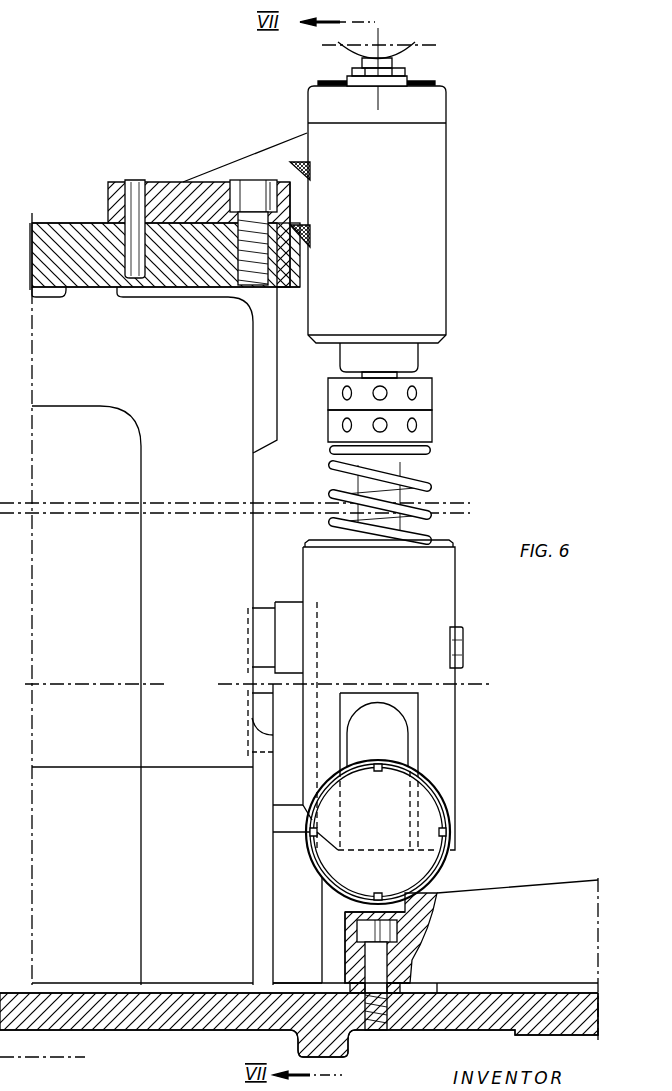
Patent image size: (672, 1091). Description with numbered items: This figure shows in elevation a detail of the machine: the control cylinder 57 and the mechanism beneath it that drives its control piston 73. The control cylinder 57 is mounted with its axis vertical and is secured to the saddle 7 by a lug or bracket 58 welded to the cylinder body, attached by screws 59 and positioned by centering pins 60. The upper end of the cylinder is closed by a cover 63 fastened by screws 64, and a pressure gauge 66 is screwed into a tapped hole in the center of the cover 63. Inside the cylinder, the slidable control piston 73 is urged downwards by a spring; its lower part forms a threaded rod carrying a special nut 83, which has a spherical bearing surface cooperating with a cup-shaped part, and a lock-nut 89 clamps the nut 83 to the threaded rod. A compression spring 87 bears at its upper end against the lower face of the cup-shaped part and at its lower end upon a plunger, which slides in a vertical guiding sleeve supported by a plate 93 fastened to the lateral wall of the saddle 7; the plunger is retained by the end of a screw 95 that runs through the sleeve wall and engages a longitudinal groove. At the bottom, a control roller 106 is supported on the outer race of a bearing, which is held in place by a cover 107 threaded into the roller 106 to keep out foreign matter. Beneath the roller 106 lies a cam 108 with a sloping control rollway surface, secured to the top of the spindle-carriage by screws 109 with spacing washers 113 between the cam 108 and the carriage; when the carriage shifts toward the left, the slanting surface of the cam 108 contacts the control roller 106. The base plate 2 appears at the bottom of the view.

The base plate 2 is at (590, 1013).
The saddle 7 is at (58, 234).
The control cylinder 57 is at (435, 212).
The lug or bracket 58 is at (187, 197).
The screws 59 is at (257, 175).
The centering pins 60 is at (133, 188).
The cover 63 is at (430, 117).
The screws 64 is at (425, 78).
The pressure gauge 66 is at (393, 50).
The control piston 73 is at (405, 361).
The special nut 83 is at (423, 432).
The compression spring 87 is at (425, 478).
The lock-nut 89 is at (423, 403).
The plate 93 is at (285, 610).
The screw 95 is at (459, 647).
The control roller 106 is at (443, 861).
The cover 107 is at (425, 812).
The cam 108 is at (545, 896).
The screws 109 is at (407, 967).
The spacing washers 113 is at (407, 981).